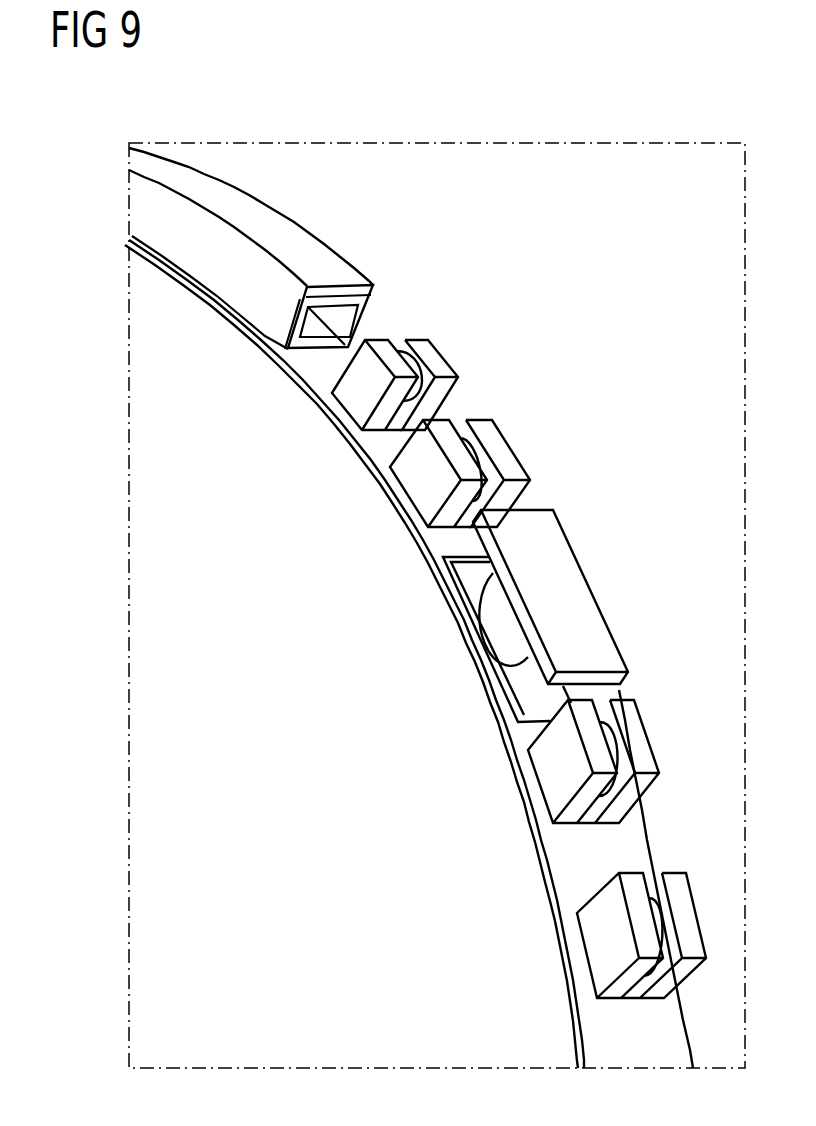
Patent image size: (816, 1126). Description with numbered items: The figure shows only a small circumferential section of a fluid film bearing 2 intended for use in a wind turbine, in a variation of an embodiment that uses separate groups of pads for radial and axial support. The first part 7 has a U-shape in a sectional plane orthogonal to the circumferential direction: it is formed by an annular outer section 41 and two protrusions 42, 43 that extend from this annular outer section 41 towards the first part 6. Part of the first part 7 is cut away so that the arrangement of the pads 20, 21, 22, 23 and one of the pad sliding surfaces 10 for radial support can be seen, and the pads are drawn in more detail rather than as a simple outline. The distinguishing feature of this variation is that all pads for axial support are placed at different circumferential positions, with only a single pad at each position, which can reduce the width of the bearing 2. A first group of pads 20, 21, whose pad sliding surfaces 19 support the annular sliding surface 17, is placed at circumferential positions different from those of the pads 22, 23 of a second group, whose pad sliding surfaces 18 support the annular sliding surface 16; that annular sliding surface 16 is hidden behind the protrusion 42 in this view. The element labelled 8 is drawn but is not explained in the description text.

The bearing 2 is at (340, 683).
The first part 6 is at (630, 843).
The first part 7 is at (290, 210).
The frame 8 is at (612, 680).
The pad sliding surface 10 is at (568, 596).
The annular sliding surface 16 is at (313, 335).
The annular sliding surface 17 is at (344, 312).
The pad sliding surface 18 is at (422, 481).
The pad sliding surface 19 is at (450, 349).
The pad 20 is at (455, 389).
The pad 21 is at (638, 732).
The pad 22 is at (517, 447).
The pad 23 is at (600, 945).
The annular outer section 41 is at (317, 260).
The protrusion 42 is at (223, 263).
The protrusion 43 is at (350, 315).